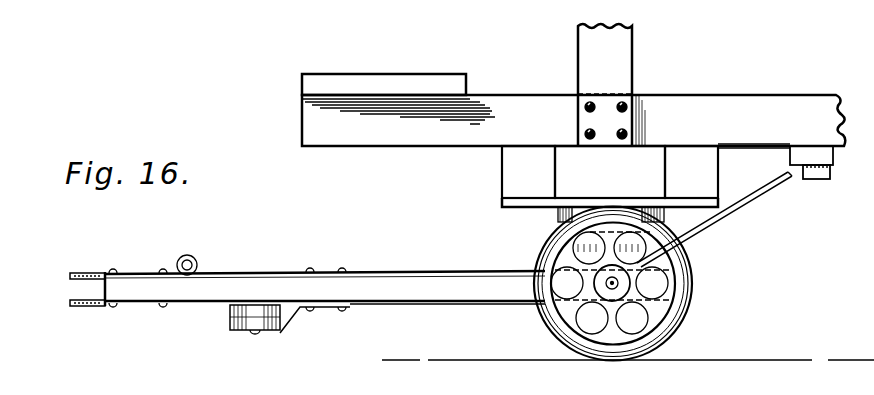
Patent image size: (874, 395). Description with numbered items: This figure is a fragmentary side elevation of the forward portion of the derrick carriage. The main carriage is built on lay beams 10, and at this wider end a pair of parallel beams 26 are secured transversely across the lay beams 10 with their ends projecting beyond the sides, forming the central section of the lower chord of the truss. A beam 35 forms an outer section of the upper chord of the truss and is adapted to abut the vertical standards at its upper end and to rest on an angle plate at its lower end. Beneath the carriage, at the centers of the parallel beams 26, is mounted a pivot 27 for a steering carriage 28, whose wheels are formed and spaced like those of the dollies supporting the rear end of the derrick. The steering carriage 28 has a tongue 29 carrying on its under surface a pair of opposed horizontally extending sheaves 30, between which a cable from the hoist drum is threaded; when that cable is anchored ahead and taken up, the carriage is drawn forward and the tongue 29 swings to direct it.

The lay beams 10 is at (388, 133).
The beam 35 is at (625, 42).
The parallel beams 26 is at (528, 157).
The pivot 27 is at (665, 265).
The tongue 29 is at (395, 285).
The steering carriage 28 is at (421, 308).
The sheaves 30 is at (232, 322).